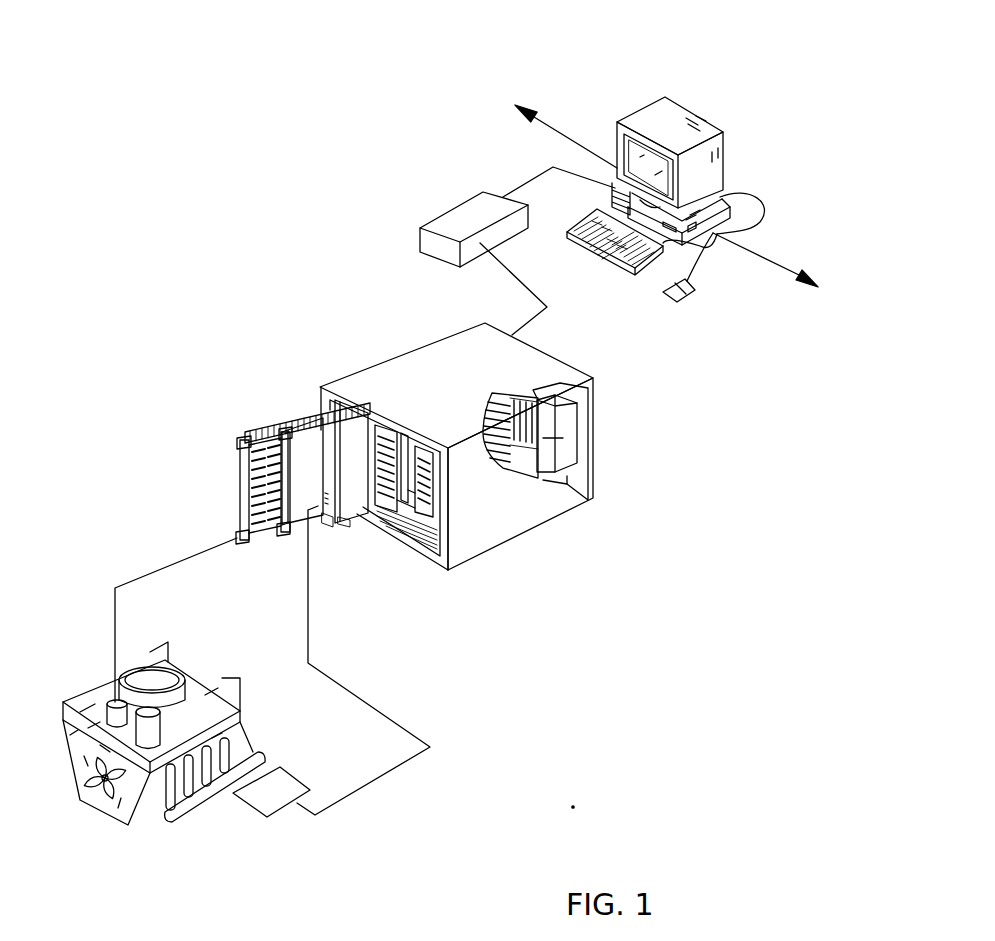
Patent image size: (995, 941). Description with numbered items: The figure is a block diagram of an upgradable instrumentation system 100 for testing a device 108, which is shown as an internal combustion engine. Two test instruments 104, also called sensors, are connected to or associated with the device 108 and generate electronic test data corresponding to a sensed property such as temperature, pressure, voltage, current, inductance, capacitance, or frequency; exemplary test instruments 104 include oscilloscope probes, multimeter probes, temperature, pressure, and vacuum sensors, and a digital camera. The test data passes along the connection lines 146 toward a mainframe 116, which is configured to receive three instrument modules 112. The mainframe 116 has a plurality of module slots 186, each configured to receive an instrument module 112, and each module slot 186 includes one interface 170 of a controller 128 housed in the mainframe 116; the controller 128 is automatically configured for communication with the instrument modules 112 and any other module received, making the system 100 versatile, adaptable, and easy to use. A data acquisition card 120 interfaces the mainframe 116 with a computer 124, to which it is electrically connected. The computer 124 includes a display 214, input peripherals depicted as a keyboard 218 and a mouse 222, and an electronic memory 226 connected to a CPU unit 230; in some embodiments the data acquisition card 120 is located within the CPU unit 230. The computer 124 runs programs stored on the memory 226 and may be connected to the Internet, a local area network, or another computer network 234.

The upgradable instrumentation system 100 is at (145, 126).
The test instrument 104 is at (105, 708).
The device 108 is at (77, 745).
The instrument module 112 is at (350, 438).
The mainframe 116 is at (315, 356).
The data acquisition card 120 is at (437, 222).
The computer 124 is at (612, 66).
The controller 128 is at (567, 453).
The coolant line 146 is at (133, 580).
The interface 170 is at (522, 392).
The module slot 186 is at (360, 527).
The display 214 is at (692, 117).
The keyboard 218 is at (597, 247).
The mouse 222 is at (673, 302).
The electronic memory 226 is at (697, 227).
The CPU unit 230 is at (720, 187).
The computer network 234 is at (478, 75).